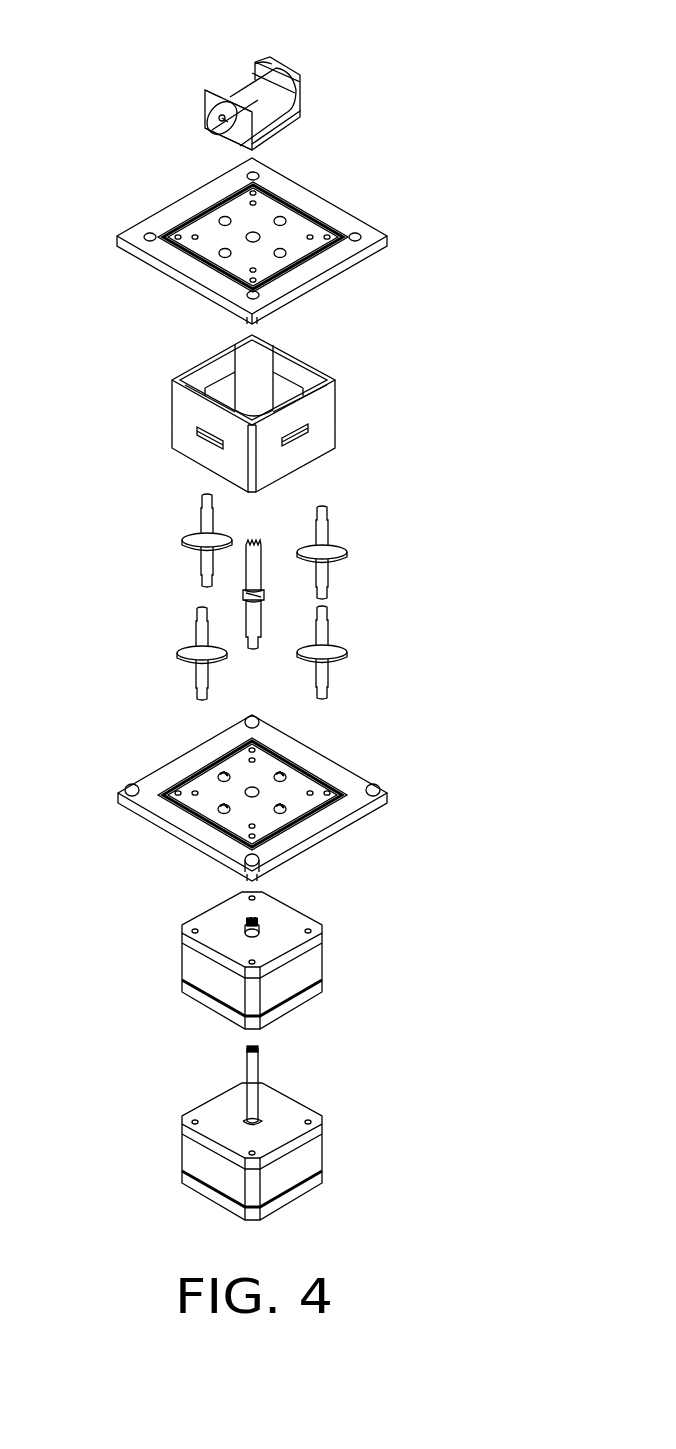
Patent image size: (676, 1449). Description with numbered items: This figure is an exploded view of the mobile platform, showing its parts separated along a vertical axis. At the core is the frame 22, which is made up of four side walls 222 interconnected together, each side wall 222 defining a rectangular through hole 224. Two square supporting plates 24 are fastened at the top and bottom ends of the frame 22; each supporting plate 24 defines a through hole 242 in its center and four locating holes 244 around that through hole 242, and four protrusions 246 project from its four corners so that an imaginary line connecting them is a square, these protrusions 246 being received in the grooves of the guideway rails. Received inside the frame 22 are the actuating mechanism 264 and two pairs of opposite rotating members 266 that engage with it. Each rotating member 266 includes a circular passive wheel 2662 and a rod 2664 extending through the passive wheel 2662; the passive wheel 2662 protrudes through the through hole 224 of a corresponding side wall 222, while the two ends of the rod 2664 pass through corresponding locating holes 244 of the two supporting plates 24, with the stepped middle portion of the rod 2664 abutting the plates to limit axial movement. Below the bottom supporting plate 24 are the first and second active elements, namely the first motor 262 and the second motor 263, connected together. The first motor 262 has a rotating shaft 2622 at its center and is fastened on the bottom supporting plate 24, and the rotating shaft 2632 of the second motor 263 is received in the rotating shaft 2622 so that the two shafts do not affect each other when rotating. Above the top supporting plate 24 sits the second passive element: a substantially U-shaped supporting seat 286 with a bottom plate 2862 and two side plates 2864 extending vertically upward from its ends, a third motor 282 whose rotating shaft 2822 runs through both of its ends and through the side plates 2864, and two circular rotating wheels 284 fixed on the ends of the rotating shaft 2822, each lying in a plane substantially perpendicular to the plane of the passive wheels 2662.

The third motor 282 is at (192, 81).
The rotating wheel 284 is at (207, 99).
The rotating shaft 2822 is at (221, 121).
The side plate 2864 is at (302, 96).
The bottom plate 2862 is at (292, 122).
The supporting seat 286 is at (290, 83).
The supporting plate 24 is at (400, 212).
The side wall 222 is at (283, 365).
The frame 22 is at (314, 402).
The through hole 224 is at (302, 442).
The rod 2664 is at (323, 528).
The passive wheel 2662 is at (342, 552).
The rotating member 266 is at (427, 552).
The actuating mechanism 264 is at (250, 572).
The through hole 242 is at (254, 786).
The protrusion 246 is at (374, 787).
The locating hole 244 is at (285, 809).
The rotating shaft 2622 is at (260, 920).
The first motor 262 is at (304, 954).
The rotating shaft 2632 is at (254, 1068).
The third motor 263 is at (309, 1130).